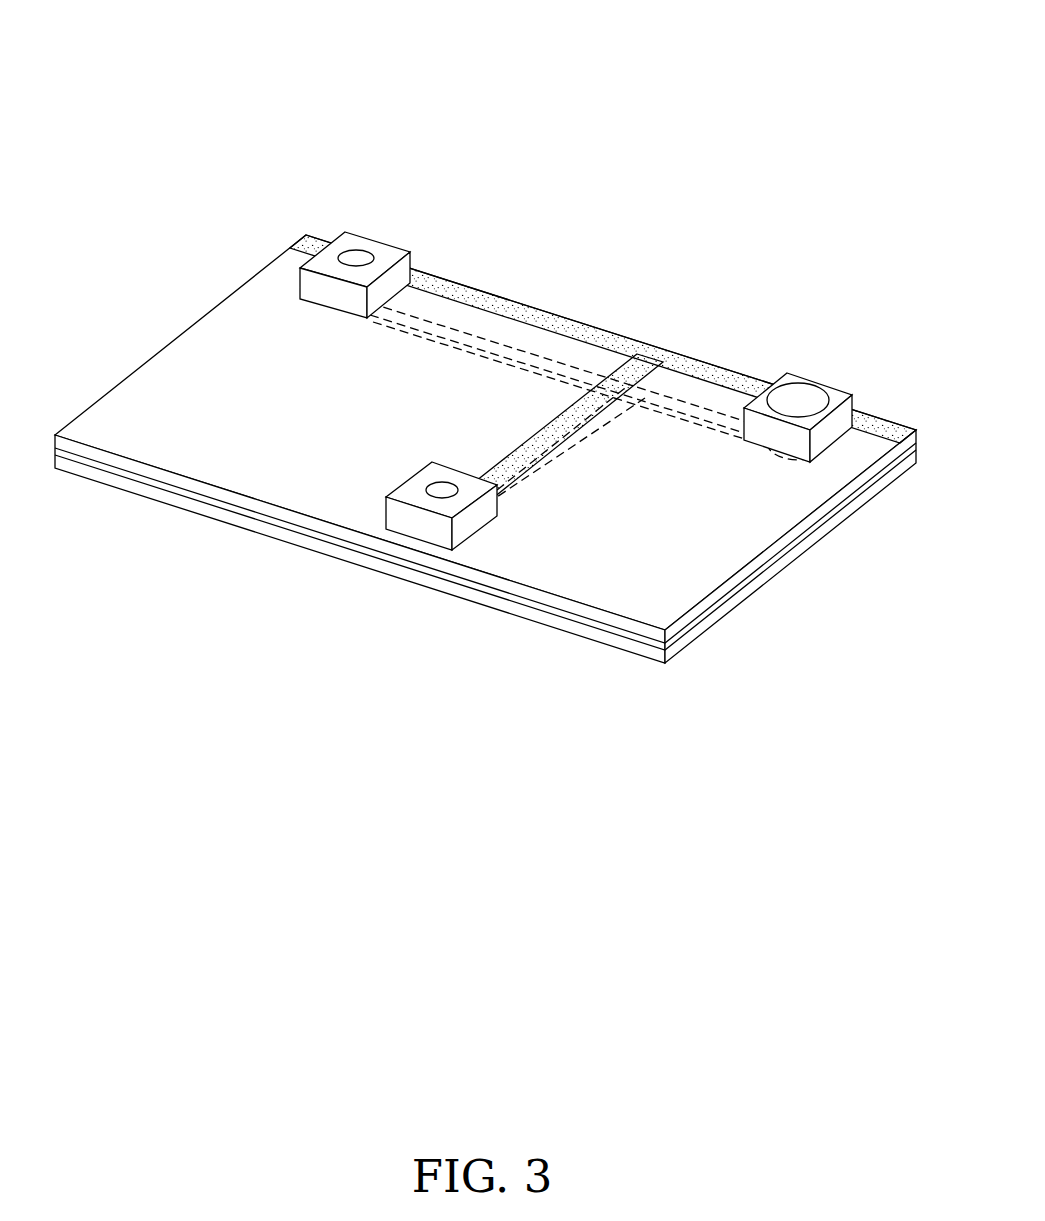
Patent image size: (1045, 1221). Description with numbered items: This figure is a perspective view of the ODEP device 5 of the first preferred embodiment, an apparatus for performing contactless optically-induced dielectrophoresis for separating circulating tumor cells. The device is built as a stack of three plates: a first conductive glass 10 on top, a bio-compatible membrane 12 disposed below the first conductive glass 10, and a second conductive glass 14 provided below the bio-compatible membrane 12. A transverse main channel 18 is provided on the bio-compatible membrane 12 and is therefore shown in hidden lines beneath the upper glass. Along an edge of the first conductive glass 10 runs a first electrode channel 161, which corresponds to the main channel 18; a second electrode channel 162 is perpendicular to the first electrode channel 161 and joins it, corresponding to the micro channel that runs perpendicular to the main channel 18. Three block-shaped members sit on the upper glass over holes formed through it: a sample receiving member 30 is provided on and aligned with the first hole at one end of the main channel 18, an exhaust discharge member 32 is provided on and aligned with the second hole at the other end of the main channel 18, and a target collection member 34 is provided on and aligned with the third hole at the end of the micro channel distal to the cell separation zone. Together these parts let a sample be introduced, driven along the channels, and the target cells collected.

The ODEP device 5 is at (290, 154).
The first conductive glass 10 is at (163, 345).
The bio-compatible membrane 12 is at (123, 470).
The second conductive glass 14 is at (197, 508).
The first electrode channel 161 is at (513, 298).
The second electrode channel 162 is at (540, 430).
The main channel 18 is at (527, 365).
The sample receiving member 30 is at (802, 400).
The exhaust discharge member 32 is at (358, 258).
The target collection member 34 is at (408, 480).